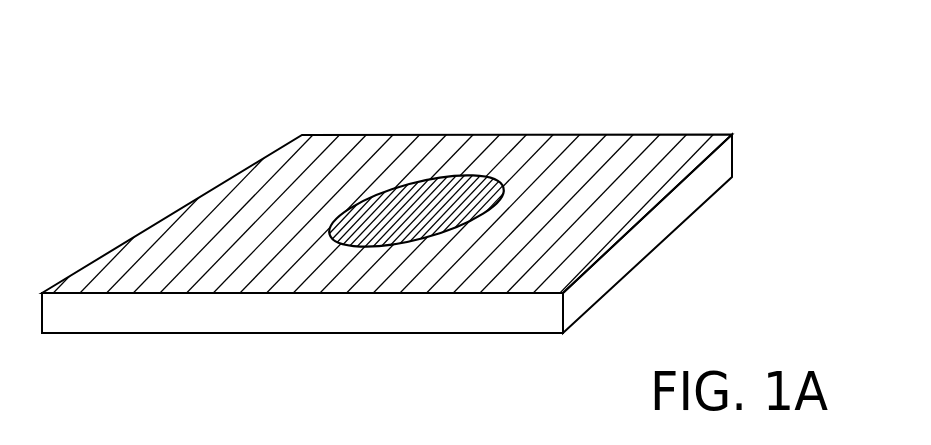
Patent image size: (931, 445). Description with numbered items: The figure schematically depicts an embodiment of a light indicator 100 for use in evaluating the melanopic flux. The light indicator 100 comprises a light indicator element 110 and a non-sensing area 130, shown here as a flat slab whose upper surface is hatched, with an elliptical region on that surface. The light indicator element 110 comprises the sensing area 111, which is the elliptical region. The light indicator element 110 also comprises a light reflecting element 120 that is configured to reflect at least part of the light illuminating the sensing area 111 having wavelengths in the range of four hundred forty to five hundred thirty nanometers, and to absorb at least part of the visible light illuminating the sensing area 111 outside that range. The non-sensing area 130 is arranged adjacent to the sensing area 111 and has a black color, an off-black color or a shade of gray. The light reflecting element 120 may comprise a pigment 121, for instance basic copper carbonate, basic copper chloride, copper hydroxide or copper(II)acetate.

The light indicator 100 is at (178, 90).
The light indicator element 110 is at (377, 281).
The non-sensing area 130 is at (533, 272).
The light reflecting element 120 is at (455, 161).
The pigment 121 is at (455, 161).
The sensing area 111 is at (398, 200).